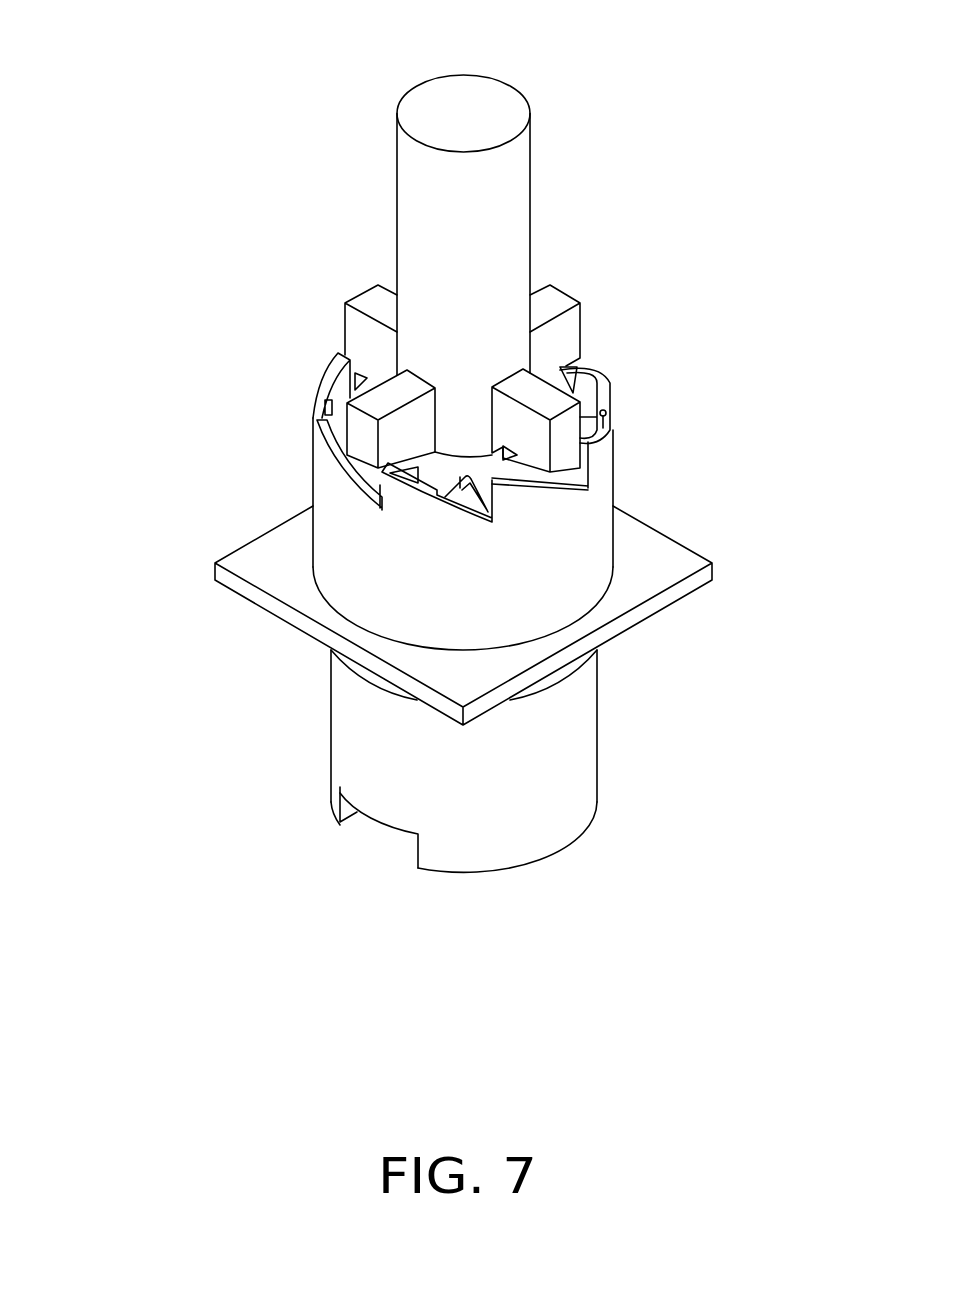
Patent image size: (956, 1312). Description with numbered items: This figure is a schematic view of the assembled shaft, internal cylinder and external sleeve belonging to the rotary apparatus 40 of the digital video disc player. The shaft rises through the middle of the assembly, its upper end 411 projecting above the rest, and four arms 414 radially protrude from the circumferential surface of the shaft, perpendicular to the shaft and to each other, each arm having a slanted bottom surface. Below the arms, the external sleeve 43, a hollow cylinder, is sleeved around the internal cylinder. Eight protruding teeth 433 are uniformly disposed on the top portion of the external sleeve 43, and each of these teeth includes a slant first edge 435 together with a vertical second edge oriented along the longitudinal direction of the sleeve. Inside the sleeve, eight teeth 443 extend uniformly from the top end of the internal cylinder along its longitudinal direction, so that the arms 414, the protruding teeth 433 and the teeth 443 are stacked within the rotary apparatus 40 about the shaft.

The rotary apparatus 40 is at (302, 67).
The upper end 411 is at (475, 100).
The arms 414 is at (550, 300).
The external sleeve 43 is at (592, 513).
The protruding teeth 433 is at (330, 380).
The first edge 435 is at (333, 442).
The teeth 443 is at (463, 498).